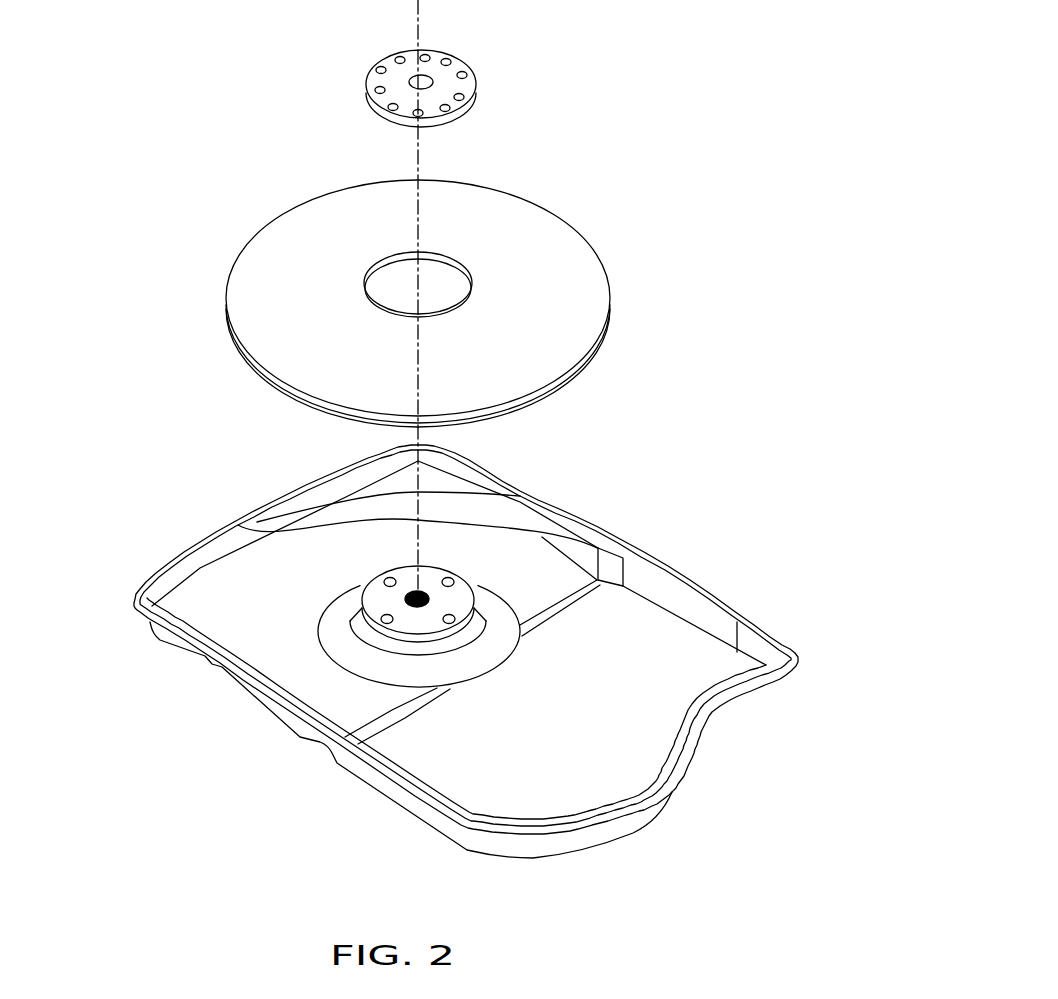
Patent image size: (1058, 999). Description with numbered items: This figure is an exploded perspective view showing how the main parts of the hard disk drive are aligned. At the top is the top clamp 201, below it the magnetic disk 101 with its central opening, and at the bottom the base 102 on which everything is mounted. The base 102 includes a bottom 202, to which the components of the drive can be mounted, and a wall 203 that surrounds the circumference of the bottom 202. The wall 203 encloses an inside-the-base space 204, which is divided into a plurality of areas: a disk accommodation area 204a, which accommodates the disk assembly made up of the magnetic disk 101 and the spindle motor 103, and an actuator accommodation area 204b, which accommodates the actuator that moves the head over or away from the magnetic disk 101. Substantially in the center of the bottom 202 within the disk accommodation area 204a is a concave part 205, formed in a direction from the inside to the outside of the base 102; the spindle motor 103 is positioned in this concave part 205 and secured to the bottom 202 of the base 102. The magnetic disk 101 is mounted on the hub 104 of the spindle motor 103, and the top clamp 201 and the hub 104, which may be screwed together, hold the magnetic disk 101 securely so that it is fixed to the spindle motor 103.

The magnetic disk 101 is at (538, 230).
The base 102 is at (710, 738).
The spindle motor 103 is at (290, 574).
The hub 104 is at (333, 608).
The top clamp 201 is at (455, 63).
The bottom 202 is at (432, 773).
The wall 203 is at (702, 613).
The inside-the-base space 204 is at (638, 450).
The disk accommodation area 204a is at (535, 557).
The actuator accommodation area 204b is at (630, 630).
The concave part 205 is at (353, 660).